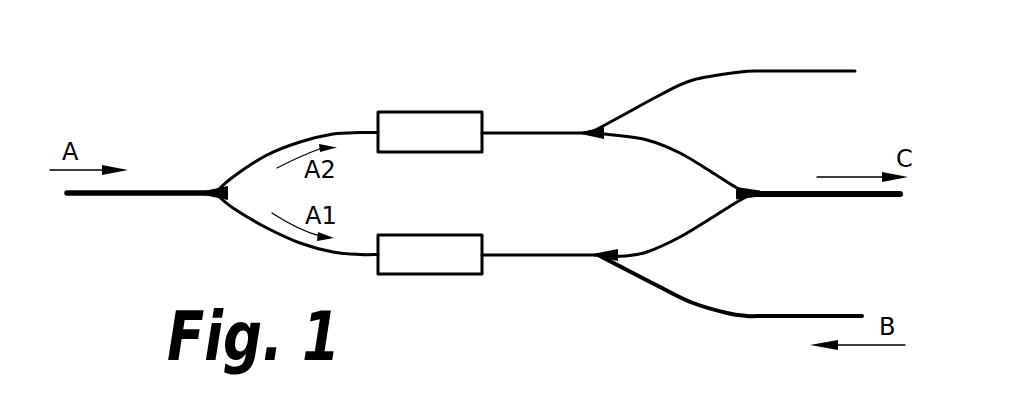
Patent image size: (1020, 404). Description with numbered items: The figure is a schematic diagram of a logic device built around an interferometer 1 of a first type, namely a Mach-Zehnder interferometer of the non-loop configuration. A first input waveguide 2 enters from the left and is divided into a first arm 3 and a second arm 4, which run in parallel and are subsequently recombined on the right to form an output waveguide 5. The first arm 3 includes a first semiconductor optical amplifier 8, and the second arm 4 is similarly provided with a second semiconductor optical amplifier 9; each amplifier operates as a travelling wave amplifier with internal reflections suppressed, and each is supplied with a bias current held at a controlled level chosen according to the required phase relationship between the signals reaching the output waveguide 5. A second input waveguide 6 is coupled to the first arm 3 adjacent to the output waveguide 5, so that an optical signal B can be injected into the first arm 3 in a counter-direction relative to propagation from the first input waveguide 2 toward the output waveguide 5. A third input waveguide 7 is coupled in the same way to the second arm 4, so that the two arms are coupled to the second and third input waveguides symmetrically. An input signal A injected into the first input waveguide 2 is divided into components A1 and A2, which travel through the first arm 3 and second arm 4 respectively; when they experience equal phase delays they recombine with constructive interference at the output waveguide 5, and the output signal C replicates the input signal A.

The interferometer 1 is at (481, 73).
The first input waveguide 2 is at (147, 190).
The first arm 3 is at (297, 243).
The second arm 4 is at (300, 141).
The output waveguide 5 is at (808, 197).
The second input waveguide 6 is at (757, 318).
The third input waveguide 7 is at (738, 71).
The first semiconductor optical amplifier 8 is at (430, 275).
The second semiconductor optical amplifier 9 is at (425, 112).